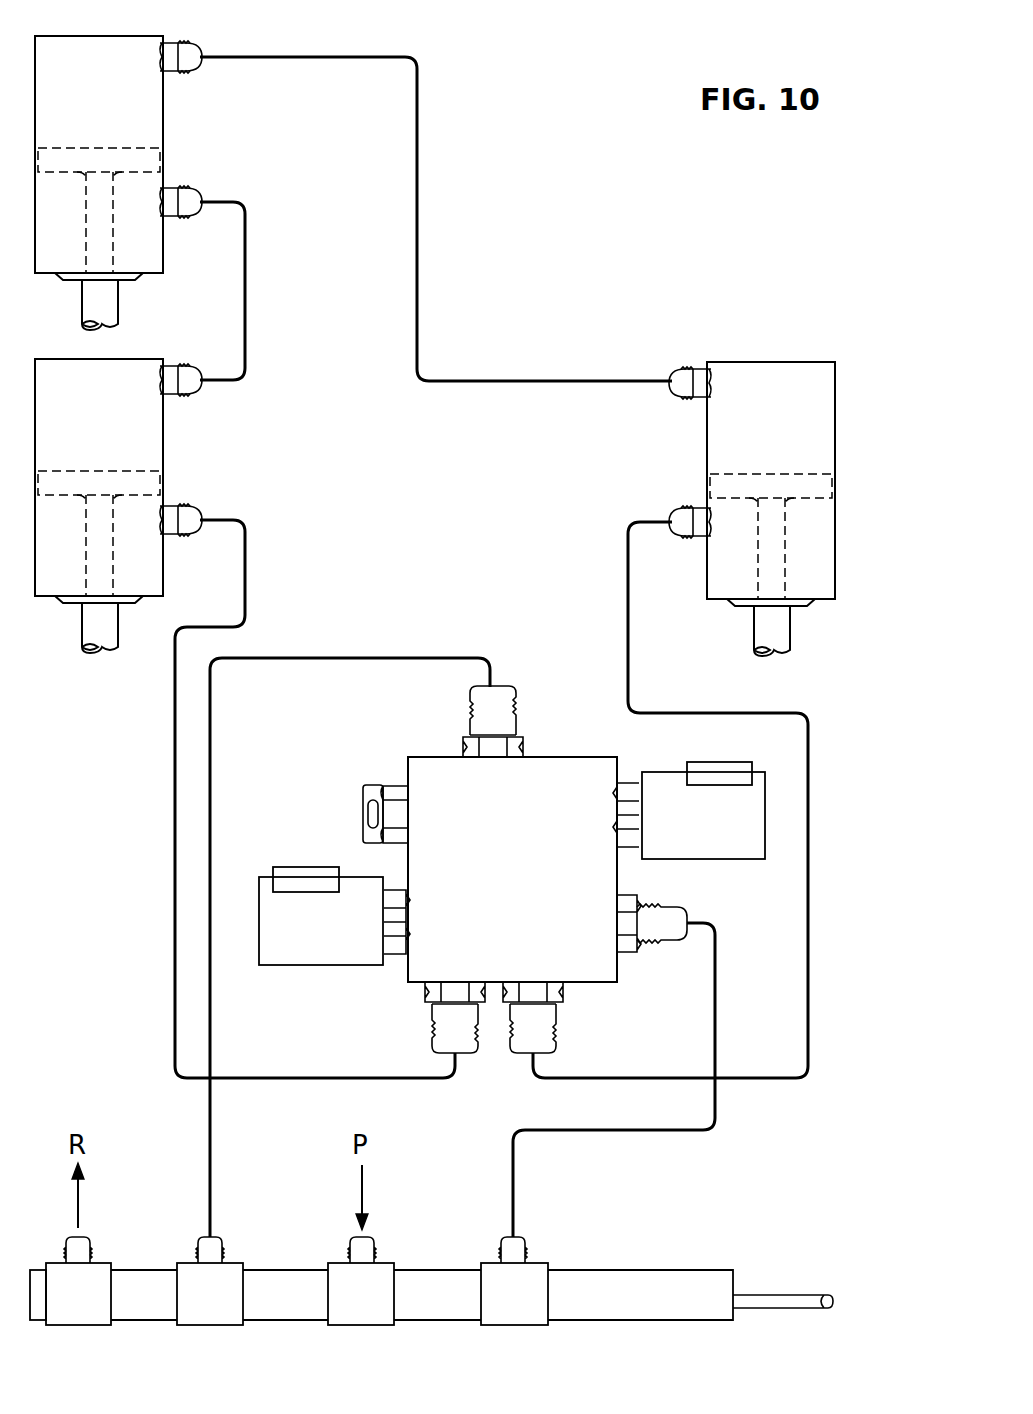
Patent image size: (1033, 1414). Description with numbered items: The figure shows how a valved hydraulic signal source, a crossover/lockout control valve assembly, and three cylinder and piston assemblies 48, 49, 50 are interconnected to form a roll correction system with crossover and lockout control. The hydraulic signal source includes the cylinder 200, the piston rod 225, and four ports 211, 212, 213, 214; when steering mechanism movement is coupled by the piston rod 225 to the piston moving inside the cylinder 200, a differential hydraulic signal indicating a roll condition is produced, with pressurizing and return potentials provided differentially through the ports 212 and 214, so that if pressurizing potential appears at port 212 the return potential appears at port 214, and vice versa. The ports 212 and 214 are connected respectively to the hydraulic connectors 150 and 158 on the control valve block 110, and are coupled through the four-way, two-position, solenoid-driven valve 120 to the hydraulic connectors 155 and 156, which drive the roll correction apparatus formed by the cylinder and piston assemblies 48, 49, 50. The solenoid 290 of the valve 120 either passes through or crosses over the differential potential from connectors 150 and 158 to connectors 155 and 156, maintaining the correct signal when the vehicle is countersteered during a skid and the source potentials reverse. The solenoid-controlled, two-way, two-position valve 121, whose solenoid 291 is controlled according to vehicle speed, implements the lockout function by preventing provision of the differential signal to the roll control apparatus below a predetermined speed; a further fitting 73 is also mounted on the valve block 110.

The cylinder and piston assembly 50 is at (165, 120).
The cylinder and piston assembly 48 is at (165, 426).
The cylinder and piston assembly 49 is at (707, 432).
The valve block 110 is at (567, 757).
The hydraulic connector 150 is at (512, 690).
The hydraulic connector 156 is at (438, 1050).
The hydraulic connector 155 is at (548, 1050).
The hydraulic connector 158 is at (675, 940).
The four-way, two-position, solenoid-driven valve 120 is at (396, 957).
The solenoid-controlled, two-way, two-position valve 121 is at (626, 783).
The relief valve 73 is at (363, 806).
The solenoid 290 is at (298, 965).
The solenoid 291 is at (750, 859).
The cylinder 200 is at (665, 1280).
The port 211 is at (111, 1263).
The port 212 is at (243, 1263).
The port 213 is at (394, 1263).
The port 214 is at (548, 1263).
The piston rod 225 is at (800, 1296).